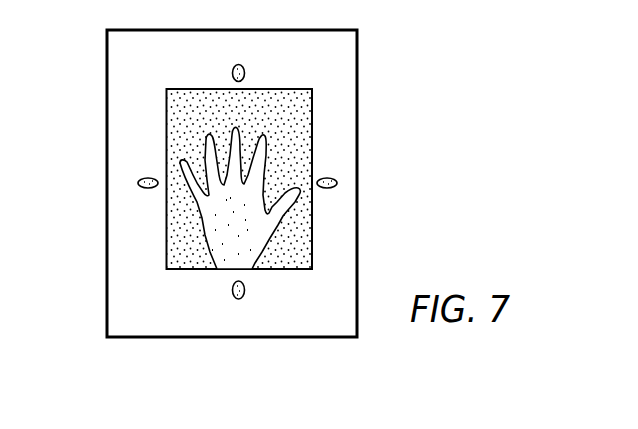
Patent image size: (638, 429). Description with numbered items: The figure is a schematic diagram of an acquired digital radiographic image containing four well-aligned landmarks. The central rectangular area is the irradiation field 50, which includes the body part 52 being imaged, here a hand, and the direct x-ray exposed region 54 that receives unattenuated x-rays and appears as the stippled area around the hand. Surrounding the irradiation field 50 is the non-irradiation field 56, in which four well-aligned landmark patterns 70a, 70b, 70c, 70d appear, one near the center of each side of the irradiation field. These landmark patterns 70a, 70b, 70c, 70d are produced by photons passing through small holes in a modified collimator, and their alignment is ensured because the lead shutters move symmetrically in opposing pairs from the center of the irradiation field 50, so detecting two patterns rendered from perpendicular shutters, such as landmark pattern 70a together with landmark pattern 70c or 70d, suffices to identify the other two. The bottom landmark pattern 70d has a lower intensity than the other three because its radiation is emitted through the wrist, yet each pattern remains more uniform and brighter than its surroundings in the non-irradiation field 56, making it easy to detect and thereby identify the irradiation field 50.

The irradiation field 50 is at (328, 114).
The body part 52 is at (300, 233).
The direct x-ray exposed region 54 is at (207, 120).
The non-irradiation field 56 is at (123, 242).
The landmark pattern 70a is at (138, 183).
The landmark pattern 70b is at (337, 183).
The landmark pattern 70c is at (245, 68).
The landmark pattern 70d is at (247, 292).